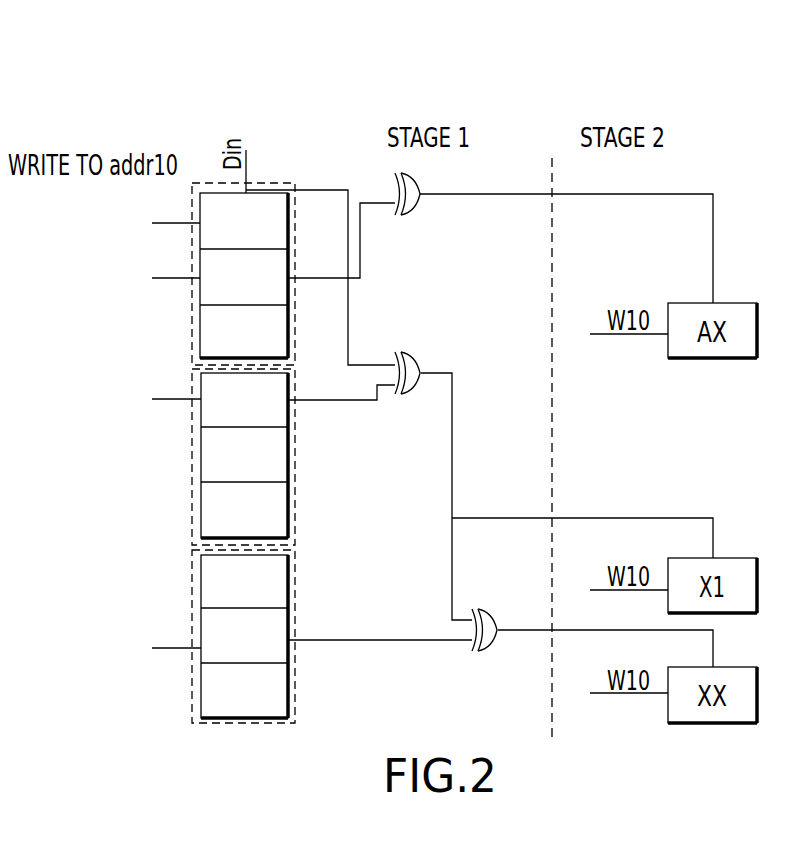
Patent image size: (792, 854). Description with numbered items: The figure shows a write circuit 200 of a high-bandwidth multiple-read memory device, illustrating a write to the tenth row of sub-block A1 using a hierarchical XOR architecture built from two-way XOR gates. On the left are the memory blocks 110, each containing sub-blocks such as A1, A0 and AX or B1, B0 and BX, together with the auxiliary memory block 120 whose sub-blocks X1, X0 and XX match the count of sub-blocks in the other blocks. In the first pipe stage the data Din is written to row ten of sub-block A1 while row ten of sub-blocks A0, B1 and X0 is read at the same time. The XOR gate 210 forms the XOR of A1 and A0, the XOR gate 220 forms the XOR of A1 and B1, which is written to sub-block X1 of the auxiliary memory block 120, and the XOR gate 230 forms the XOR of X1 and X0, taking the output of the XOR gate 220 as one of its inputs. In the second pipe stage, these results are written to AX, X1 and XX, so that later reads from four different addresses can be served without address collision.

The write circuit 200 is at (160, 118).
The memory blocks 110 is at (192, 570).
The auxiliary memory block 120 is at (192, 667).
The XOR gate 210 is at (416, 210).
The XOR gate 220 is at (413, 359).
The XOR gate 230 is at (488, 612).